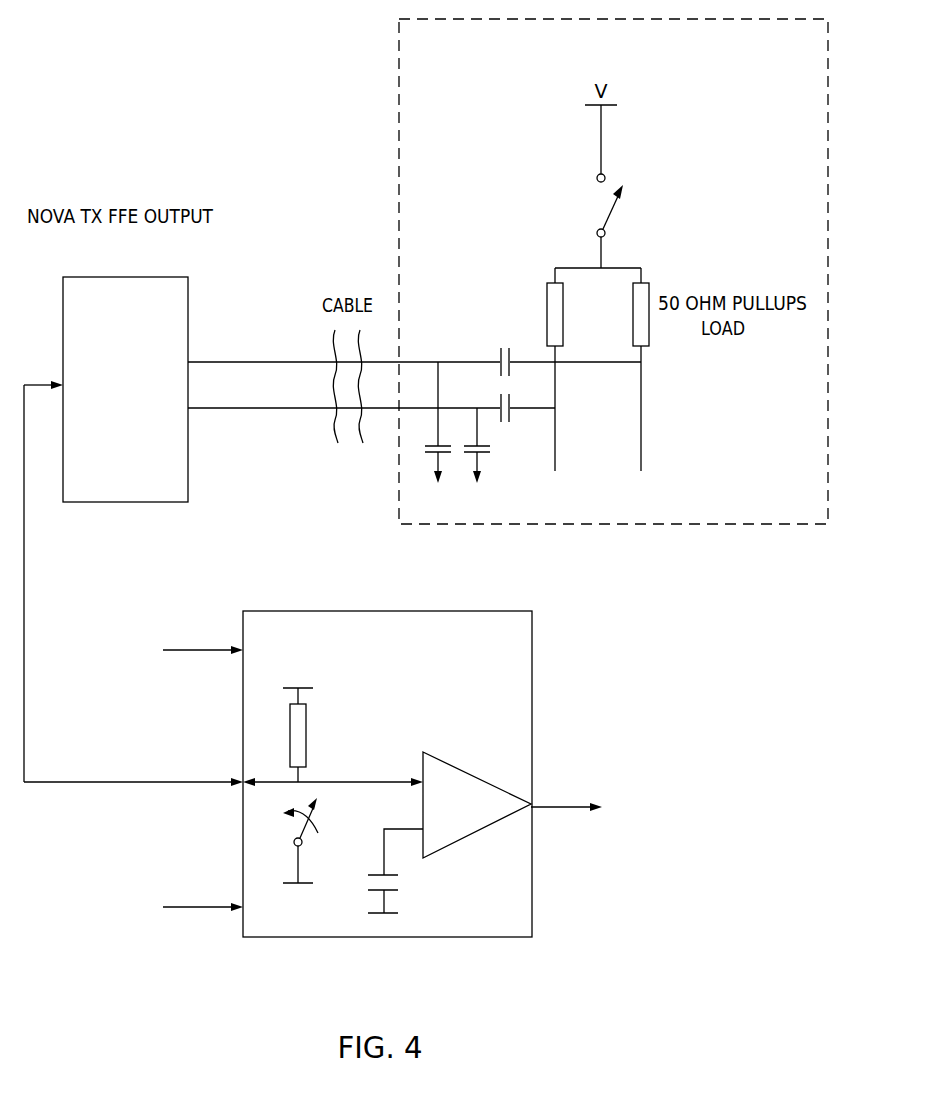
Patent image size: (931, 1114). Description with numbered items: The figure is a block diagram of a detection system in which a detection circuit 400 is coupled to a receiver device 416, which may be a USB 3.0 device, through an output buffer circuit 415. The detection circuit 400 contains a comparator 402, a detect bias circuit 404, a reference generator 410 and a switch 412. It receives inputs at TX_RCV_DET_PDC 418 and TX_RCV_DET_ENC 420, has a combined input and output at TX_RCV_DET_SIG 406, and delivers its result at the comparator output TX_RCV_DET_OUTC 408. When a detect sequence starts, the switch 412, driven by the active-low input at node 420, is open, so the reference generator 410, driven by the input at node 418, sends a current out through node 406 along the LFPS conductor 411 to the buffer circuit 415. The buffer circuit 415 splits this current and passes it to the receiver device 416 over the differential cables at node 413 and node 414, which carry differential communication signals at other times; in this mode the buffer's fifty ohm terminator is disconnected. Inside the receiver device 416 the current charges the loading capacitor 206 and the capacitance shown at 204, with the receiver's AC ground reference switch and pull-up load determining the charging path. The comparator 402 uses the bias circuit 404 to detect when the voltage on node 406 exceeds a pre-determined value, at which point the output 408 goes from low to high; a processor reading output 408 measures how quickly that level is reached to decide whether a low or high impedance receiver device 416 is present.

The detection circuit 400 is at (532, 640).
The comparator 402 is at (478, 836).
The detect bias circuit 404 is at (398, 870).
The TX_RCV_DET_SIG 406 is at (375, 780).
The comparator output TX_RCV_DET_OUTC 408 is at (563, 803).
The reference generator 410 is at (304, 713).
The LFPS conductor 411 is at (91, 581).
The switch 412 is at (303, 839).
The node QN 413 is at (414, 349).
The node QP 414 is at (371, 396).
The output buffer circuit 415 is at (188, 293).
The receiver device 416 is at (399, 45).
The TX_RCV_DET_PDC 418 is at (149, 645).
The TX_RCV_DET_ENC 420 is at (149, 903).
The load capacitors 204 is at (500, 435).
The loading capacitor 206 is at (488, 343).